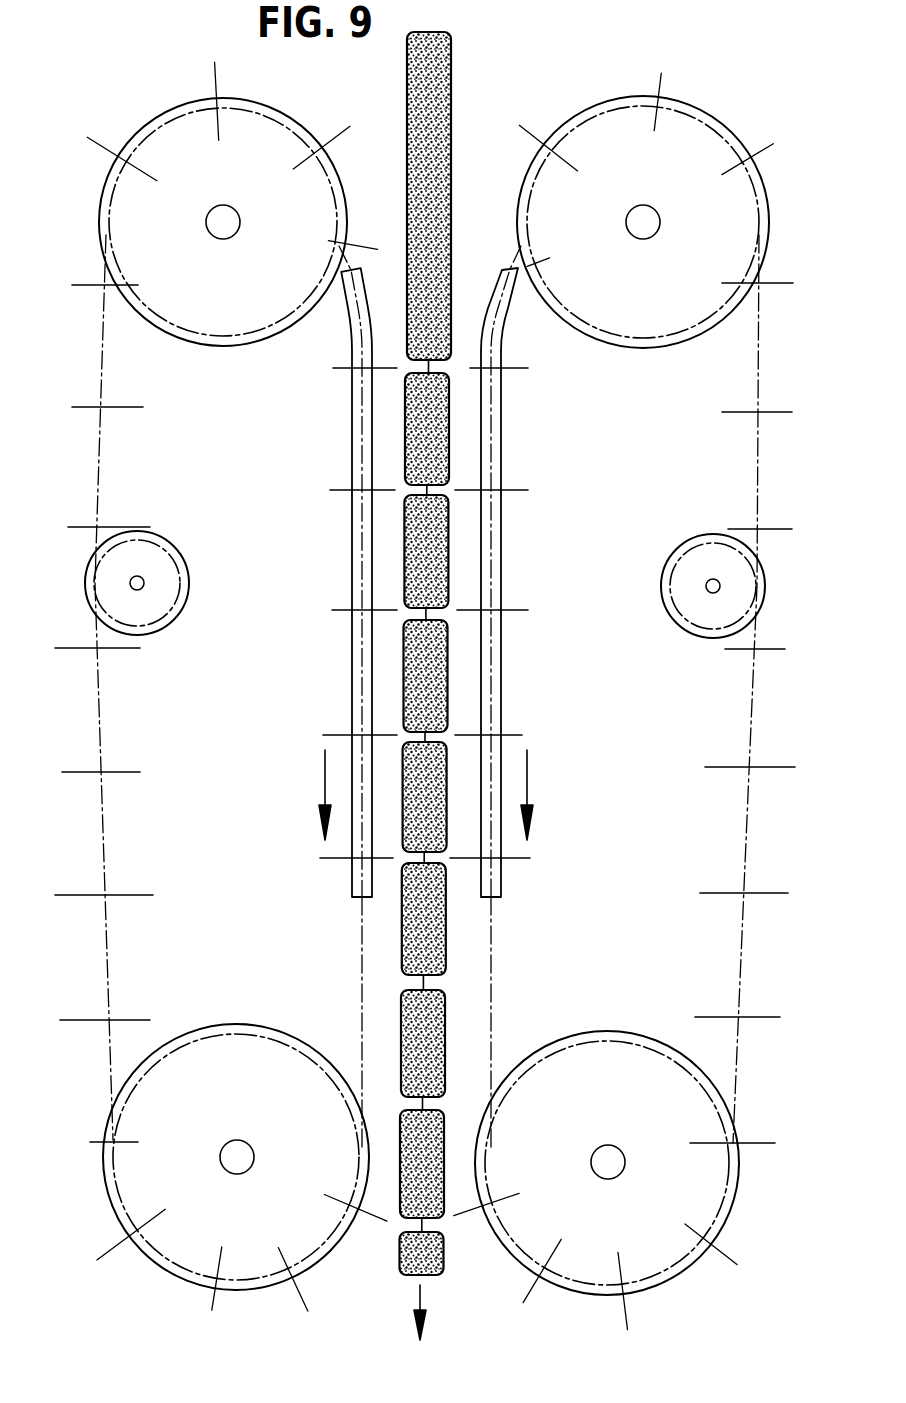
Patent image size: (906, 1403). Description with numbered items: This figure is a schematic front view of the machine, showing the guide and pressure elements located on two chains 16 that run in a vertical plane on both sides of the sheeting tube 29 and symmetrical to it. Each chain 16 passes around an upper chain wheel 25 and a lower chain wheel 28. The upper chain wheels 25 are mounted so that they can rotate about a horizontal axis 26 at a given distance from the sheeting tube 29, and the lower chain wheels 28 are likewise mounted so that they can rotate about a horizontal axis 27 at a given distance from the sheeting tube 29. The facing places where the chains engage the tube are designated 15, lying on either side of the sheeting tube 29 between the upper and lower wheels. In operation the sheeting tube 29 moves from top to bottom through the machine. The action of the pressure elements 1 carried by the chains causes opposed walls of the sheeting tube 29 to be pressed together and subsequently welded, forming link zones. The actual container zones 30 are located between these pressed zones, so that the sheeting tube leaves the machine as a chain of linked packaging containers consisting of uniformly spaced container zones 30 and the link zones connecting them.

The pressure element 1 is at (340, 138).
The facing place of engagement 15 is at (352, 460).
The conveyor belt 16 is at (100, 797).
The upper chain wheel 25 is at (123, 178).
The horizontal axis 26 is at (217, 205).
The horizontal axis 27 is at (230, 1163).
The lower chain wheel 28 is at (130, 1093).
The sheeting tube 29 is at (448, 68).
The container zone 30 is at (446, 940).